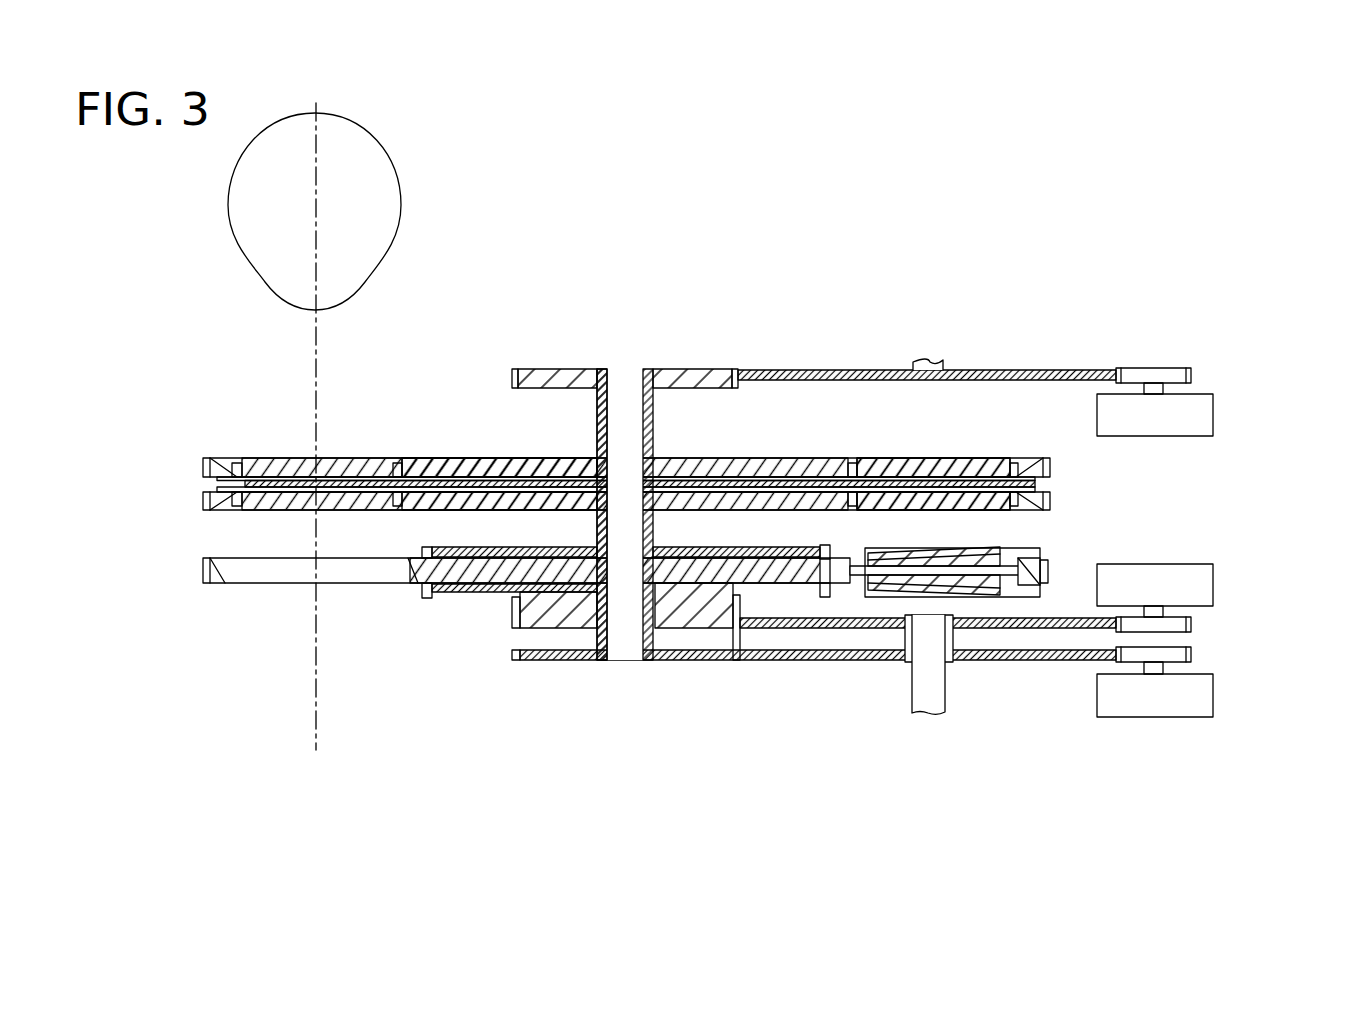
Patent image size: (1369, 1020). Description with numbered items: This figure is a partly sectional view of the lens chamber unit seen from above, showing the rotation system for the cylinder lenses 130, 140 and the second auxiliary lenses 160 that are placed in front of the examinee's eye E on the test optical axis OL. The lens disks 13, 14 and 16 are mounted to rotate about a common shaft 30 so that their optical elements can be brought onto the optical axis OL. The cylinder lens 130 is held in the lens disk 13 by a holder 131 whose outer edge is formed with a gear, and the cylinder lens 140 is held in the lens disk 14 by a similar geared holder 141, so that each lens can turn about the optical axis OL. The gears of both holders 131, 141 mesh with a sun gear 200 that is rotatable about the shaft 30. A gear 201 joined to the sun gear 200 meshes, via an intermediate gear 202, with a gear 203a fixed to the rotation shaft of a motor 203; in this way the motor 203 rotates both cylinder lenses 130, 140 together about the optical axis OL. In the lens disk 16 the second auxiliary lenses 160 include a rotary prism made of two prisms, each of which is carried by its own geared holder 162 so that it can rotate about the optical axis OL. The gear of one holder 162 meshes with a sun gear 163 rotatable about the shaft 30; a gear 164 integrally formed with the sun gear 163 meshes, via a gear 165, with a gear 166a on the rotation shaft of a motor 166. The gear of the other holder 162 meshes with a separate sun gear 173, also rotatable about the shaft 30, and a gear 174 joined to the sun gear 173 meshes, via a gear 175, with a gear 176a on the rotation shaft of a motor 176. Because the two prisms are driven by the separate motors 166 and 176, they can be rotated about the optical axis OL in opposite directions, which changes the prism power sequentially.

The examinee's eye E is at (401, 180).
The test optical axis OL is at (316, 722).
The lens disk 13 is at (203, 460).
The cylinder lens 130 is at (329, 468).
The holder 131 is at (217, 479).
The lens disk 14 is at (205, 500).
The cylinder lens 140 is at (376, 498).
The holder 141 is at (217, 489).
The lens disk 16 is at (215, 572).
The shaft 30 is at (624, 387).
The sun gear 200 is at (547, 478).
The gear 201 is at (690, 380).
The gear 202 is at (780, 370).
The motor 203 is at (1212, 413).
The gear 203a is at (1157, 368).
The second auxiliary lenses 160 is at (1005, 538).
The holder 162 is at (1040, 592).
The sun gear 163 is at (770, 590).
The gear 164 is at (690, 612).
The gear 165 is at (787, 632).
The motor 166 is at (1214, 587).
The gear 166a is at (1193, 625).
The sun gear 173 is at (675, 596).
The gear 174 is at (530, 663).
The gear 175 is at (837, 657).
The motor 176 is at (1214, 694).
The gear 176a is at (1193, 655).